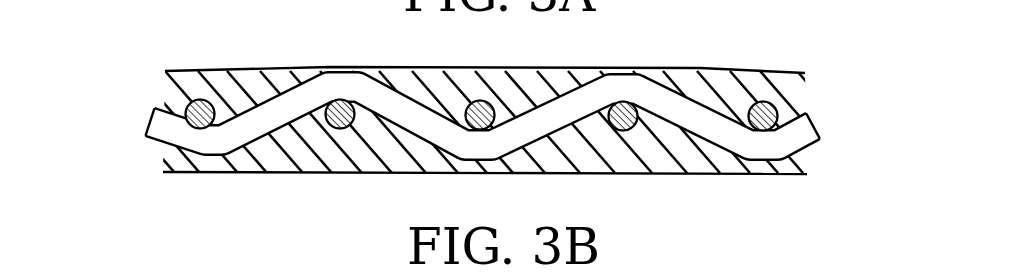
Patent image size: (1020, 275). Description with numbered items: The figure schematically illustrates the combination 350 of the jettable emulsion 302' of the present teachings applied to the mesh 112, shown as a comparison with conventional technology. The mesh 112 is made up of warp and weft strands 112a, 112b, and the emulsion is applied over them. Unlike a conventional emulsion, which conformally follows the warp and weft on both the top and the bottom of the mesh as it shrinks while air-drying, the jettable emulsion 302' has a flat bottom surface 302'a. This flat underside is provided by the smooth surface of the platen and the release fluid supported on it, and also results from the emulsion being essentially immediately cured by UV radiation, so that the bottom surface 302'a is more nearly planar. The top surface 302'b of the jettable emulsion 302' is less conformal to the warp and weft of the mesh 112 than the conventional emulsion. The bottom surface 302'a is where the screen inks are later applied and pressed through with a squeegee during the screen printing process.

The combination 350 is at (203, 38).
The jettable emulsion 302' is at (486, 120).
The bottom surface 302'a is at (485, 192).
The top surface 302'b is at (485, 50).
The mesh 112 is at (130, 126).
The strand 112a is at (698, 113).
The strand 112b is at (481, 130).